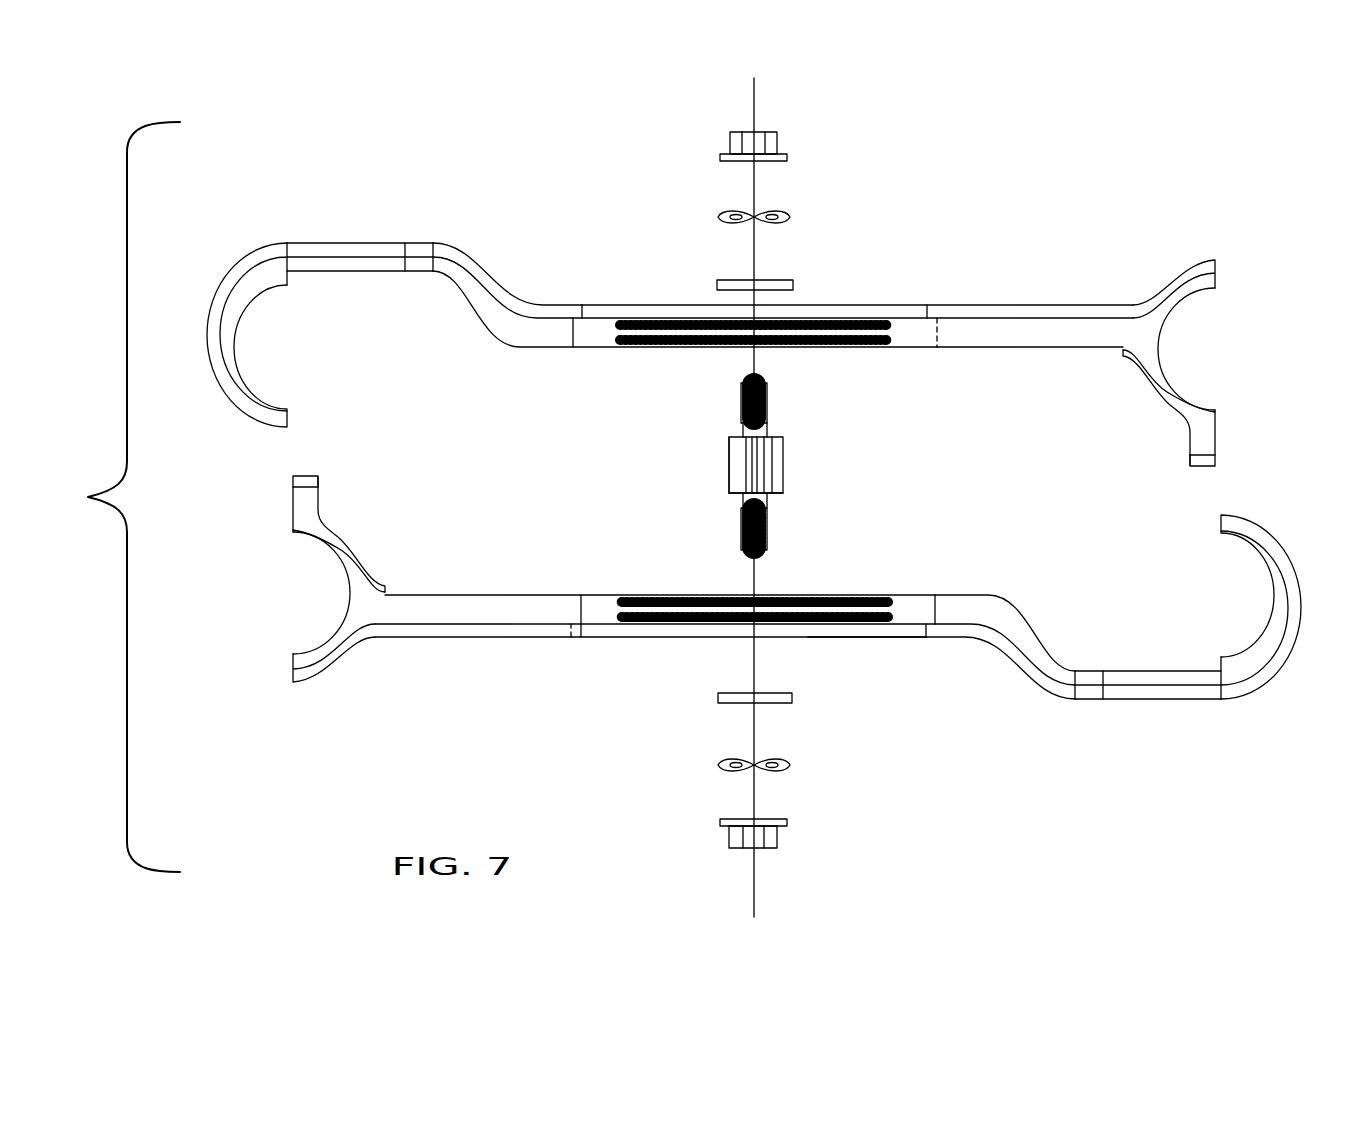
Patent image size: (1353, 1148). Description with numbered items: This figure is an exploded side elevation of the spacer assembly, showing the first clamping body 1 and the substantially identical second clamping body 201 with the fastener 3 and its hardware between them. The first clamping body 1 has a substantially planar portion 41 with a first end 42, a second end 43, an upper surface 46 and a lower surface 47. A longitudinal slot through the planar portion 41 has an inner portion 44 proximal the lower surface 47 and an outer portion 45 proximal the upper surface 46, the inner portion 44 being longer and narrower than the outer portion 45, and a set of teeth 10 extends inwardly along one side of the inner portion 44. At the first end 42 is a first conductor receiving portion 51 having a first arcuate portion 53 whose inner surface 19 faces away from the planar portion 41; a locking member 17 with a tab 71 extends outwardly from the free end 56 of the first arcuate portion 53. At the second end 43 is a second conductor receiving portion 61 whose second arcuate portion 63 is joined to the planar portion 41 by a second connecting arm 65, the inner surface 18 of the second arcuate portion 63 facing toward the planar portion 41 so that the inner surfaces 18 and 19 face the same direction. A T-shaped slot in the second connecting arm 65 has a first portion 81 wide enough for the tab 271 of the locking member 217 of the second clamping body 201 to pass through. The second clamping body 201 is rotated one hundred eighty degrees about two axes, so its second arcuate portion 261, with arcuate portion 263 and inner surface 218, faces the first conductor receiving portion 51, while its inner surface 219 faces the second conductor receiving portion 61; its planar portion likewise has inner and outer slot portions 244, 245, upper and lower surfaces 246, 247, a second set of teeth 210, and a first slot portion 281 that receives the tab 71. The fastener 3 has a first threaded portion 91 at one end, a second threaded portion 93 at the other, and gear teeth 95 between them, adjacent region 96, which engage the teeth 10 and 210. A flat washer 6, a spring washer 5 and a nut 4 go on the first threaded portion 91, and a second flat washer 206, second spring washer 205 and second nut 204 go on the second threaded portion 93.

The first clamping body 1 is at (738, 324).
The fastener 3 is at (787, 463).
The nut 4 is at (777, 143).
The spring washer 5 is at (790, 217).
The flat washer 6 is at (793, 285).
The teeth 10 is at (862, 335).
The locking member 17 is at (1218, 461).
The inner surface 18 is at (247, 387).
The inner surface 19 is at (1172, 378).
The planar portion 41 is at (1060, 305).
The first end 42 is at (1118, 305).
The second end 43 is at (549, 305).
The inner portion 44 is at (573, 335).
The outer portion 45 is at (578, 318).
The upper surface 46 is at (960, 305).
The lower surface 47 is at (598, 347).
The first conductor receiving portion 51 is at (1196, 258).
The first arcuate portion 53 is at (1140, 385).
The free end 56 is at (1220, 416).
The second conductor receiving portion 61 is at (245, 256).
The second arcuate portion 63 is at (207, 330).
The second connecting arm 65 is at (352, 243).
The tab 71 is at (1190, 460).
The first portion 81 is at (421, 243).
The first threaded portion 91 is at (767, 405).
The second threaded portion 93 is at (767, 532).
The gear teeth 95 is at (729, 455).
The sleeve end face 96 is at (783, 497).
The second clamping body 201 is at (751, 625).
The second nut 204 is at (777, 838).
The second spring washer 205 is at (790, 765).
The second flat washer 206 is at (792, 698).
The second set of teeth 210 is at (862, 600).
The locking member 217 is at (292, 503).
The inner hook surface 218 is at (1262, 563).
The arcuate recess 219 is at (338, 565).
The step face 244 is at (572, 610).
The shoulder 245 is at (940, 637).
The lower surface of bar 246 is at (505, 637).
The upper surface of bar 247 is at (500, 593).
The second arcuate portion 261 is at (1143, 700).
The hook outer surface 263 is at (1288, 655).
The tab 271 is at (318, 483).
The first portion 281 is at (1100, 700).